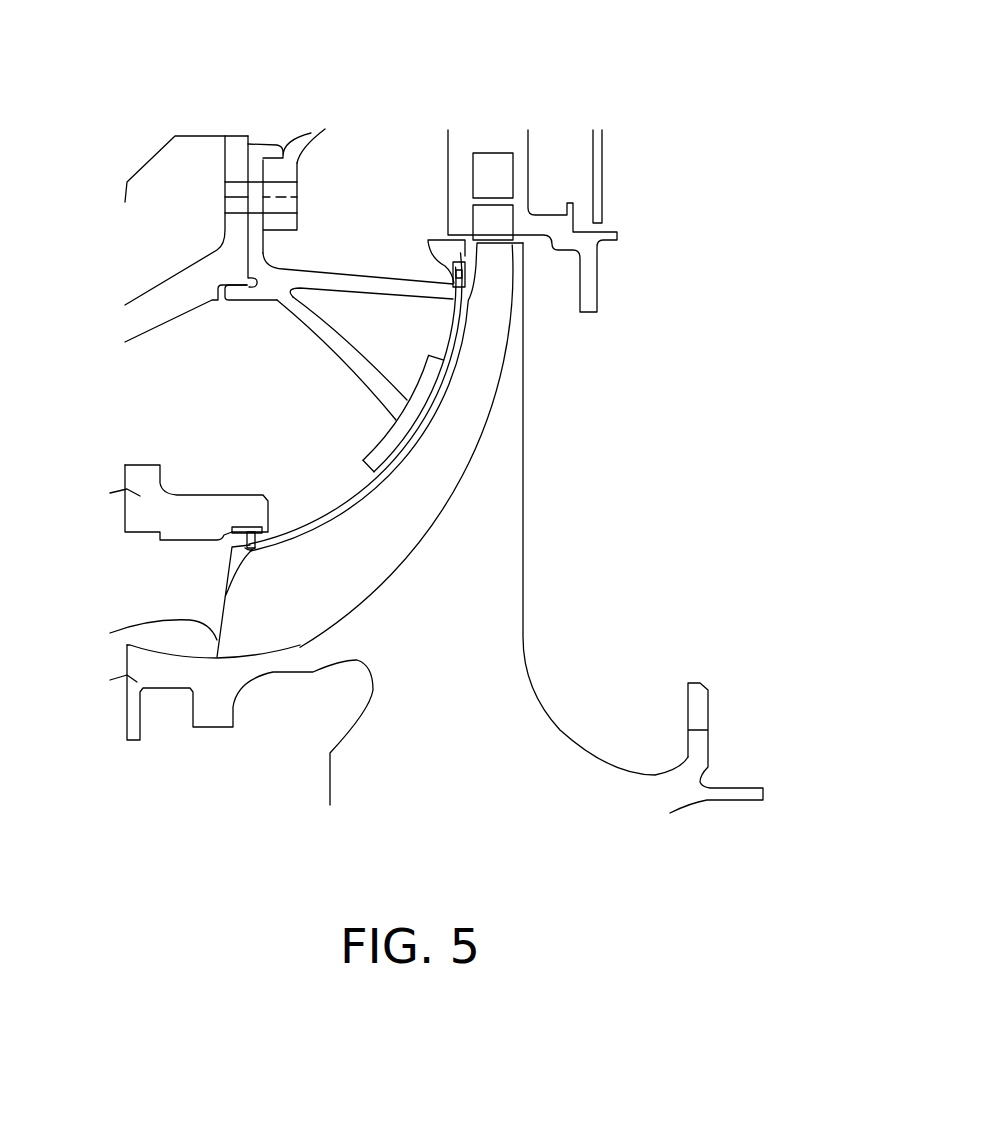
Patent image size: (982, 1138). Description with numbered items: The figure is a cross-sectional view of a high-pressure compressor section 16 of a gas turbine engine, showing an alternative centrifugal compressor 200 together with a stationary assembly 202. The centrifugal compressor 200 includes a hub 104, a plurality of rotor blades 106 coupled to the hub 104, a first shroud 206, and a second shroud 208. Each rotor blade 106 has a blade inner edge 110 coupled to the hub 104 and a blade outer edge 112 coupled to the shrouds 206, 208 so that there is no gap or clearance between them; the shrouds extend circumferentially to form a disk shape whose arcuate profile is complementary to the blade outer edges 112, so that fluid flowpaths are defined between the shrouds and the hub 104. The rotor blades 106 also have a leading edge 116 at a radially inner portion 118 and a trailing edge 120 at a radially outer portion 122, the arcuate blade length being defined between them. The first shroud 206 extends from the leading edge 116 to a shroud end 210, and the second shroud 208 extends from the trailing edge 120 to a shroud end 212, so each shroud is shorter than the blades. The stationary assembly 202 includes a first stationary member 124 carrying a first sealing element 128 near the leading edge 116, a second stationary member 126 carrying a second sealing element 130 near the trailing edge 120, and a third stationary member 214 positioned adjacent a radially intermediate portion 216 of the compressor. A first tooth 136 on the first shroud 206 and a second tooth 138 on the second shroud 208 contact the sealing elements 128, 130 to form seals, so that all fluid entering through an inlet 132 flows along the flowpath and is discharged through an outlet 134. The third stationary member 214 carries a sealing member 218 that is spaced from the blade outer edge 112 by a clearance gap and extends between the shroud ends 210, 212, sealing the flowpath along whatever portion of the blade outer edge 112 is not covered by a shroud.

The high-pressure compressor section 16 is at (318, 100).
The hub 104 is at (426, 672).
The rotor blades 106 is at (311, 595).
The blade inner edge 110 is at (307, 650).
The blade outer edge 112 is at (363, 503).
The leading edge 116 is at (210, 648).
The radially inner portion 118 is at (280, 532).
The trailing edge 120 is at (495, 240).
The radially outer portion 122 is at (438, 233).
The first stationary member 124 is at (195, 513).
The second stationary member 126 is at (313, 279).
The first sealing element 128 is at (247, 527).
The second sealing element 130 is at (450, 277).
The inlet 132 is at (215, 564).
The outlet 134 is at (485, 214).
The first tooth 136 is at (240, 563).
The second tooth 138 is at (467, 287).
The centrifugal compressor 200 is at (494, 732).
The stationary assembly 202 is at (231, 128).
The first shroud 206 is at (277, 545).
The second shroud 208 is at (457, 333).
The shroud end 210 is at (387, 477).
The shroud end 212 is at (450, 377).
The third stationary member 214 is at (322, 350).
The radially intermediate portion 216 is at (407, 460).
The sealing member 218 is at (430, 420).